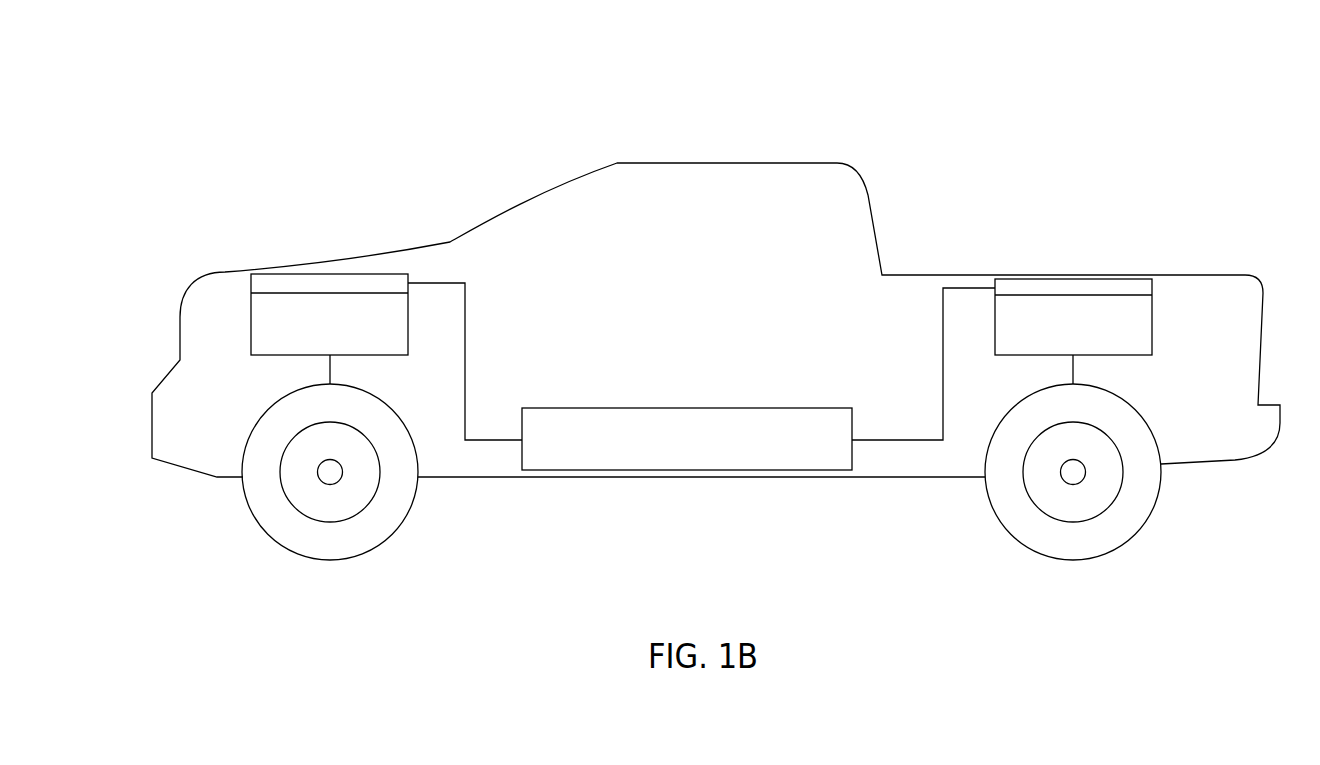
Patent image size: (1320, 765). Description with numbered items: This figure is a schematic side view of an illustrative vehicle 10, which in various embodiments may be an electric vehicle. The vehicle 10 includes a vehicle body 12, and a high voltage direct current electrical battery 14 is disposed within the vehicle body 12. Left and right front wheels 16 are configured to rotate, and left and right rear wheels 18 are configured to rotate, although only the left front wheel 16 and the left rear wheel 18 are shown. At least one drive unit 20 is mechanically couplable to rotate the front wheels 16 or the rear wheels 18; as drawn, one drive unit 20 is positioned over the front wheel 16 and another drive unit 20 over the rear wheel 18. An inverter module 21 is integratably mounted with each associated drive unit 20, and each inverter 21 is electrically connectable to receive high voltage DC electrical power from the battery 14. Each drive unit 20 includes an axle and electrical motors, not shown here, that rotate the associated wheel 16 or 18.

The vehicle 10 is at (716, 276).
The vehicle body 12 is at (903, 250).
The high voltage direct current (DC) electrical battery 14 is at (685, 408).
The front wheel 16 is at (407, 513).
The rear wheel 18 is at (1152, 513).
The drive unit 20 is at (238, 347).
The inverter module 21 is at (410, 278).